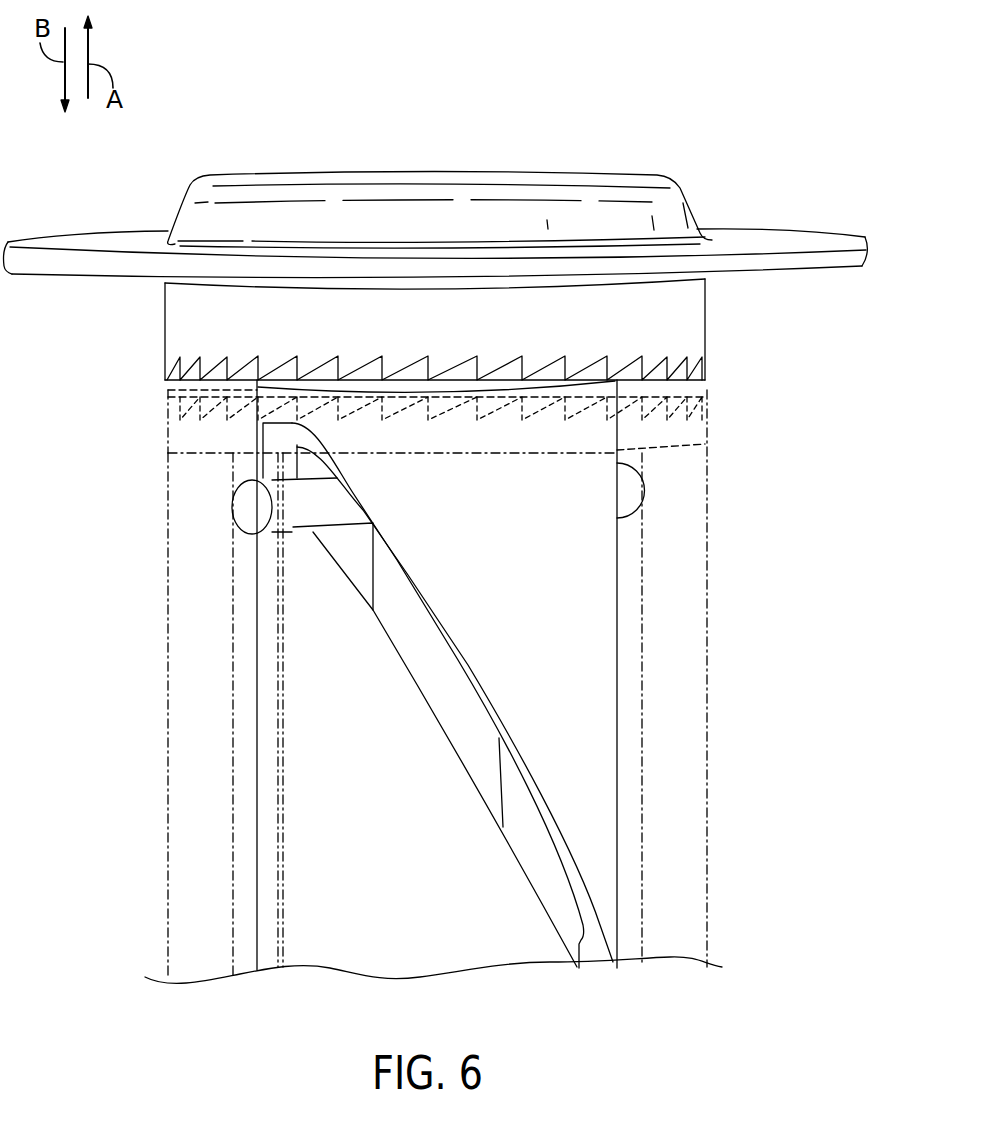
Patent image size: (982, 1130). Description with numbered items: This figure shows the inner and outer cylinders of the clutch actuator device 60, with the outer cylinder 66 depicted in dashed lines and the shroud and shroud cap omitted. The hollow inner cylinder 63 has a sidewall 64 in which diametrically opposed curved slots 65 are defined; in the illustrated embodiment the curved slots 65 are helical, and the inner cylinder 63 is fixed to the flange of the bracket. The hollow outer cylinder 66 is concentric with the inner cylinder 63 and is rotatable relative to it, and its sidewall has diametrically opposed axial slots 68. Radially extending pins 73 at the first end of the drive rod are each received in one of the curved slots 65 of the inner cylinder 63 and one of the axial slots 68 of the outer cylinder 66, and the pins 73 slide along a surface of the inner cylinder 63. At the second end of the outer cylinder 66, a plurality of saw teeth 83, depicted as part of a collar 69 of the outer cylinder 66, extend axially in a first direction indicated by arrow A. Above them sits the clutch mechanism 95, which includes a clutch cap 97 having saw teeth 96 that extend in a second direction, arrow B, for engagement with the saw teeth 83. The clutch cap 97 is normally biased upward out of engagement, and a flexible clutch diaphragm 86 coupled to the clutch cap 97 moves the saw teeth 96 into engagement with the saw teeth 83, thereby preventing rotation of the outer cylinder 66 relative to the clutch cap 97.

The clutch actuator device 60 is at (80, 716).
The inner cylinder 63 is at (317, 950).
The sidewall 64 is at (602, 690).
The curved slots 65 is at (452, 692).
The outer cylinder 66 is at (168, 583).
The axial slots 68 is at (253, 799).
The collar 69 is at (177, 435).
The pins 73 is at (252, 500).
The saw teeth 83 is at (630, 412).
The clutch diaphragm 86 is at (663, 187).
The clutch mechanism 95 is at (780, 320).
The saw teeth 96 is at (440, 367).
The clutch cap 97 is at (178, 318).